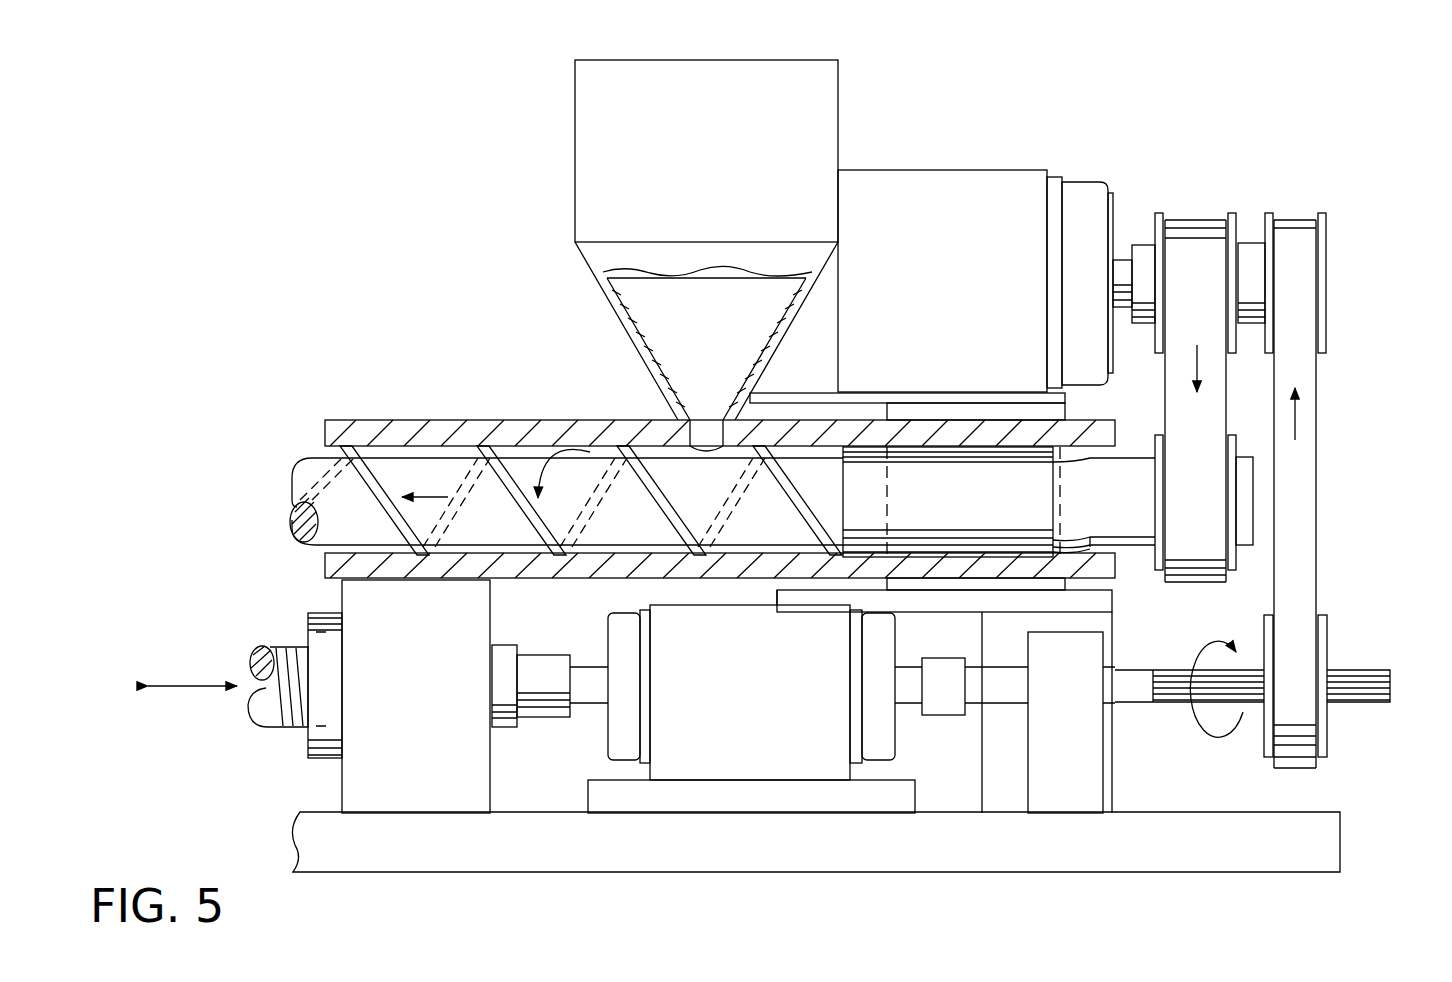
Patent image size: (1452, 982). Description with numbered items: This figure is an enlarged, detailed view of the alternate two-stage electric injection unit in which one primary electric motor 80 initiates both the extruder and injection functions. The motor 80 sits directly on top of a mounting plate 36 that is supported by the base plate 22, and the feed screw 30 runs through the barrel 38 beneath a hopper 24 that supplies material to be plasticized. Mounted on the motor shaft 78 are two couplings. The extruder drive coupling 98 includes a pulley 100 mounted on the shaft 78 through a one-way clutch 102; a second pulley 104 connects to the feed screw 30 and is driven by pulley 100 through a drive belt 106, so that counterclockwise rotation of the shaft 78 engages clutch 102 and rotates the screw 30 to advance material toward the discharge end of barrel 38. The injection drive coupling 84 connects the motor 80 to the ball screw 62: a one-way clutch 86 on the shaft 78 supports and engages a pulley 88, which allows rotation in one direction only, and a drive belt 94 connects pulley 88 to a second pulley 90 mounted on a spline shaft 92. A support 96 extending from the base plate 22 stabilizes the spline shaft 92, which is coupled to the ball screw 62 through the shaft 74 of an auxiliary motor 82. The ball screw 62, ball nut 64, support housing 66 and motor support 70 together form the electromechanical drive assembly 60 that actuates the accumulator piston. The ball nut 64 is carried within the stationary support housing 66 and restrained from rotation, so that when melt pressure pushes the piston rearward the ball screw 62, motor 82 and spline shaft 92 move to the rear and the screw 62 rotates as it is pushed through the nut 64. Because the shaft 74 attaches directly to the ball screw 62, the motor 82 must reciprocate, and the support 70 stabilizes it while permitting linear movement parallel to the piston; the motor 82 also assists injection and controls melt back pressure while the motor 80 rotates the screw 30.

The base plate 22 is at (1205, 856).
The hopper 24 is at (731, 166).
The feed screw 30 is at (395, 470).
The mounting plate 36 is at (972, 405).
The barrel 38 is at (455, 432).
The electromechanical drive assembly 60 is at (528, 830).
The ball screw 62 is at (290, 648).
The ball nut 64 is at (330, 663).
The support housing 66 is at (433, 722).
The motor support 70 is at (712, 795).
The shaft 74 is at (590, 690).
The motor shaft 78 is at (1115, 268).
The electric motor 80 is at (933, 314).
The auxiliary motor 82 is at (761, 684).
The injection drive coupling 84 is at (1358, 355).
The one-way clutch 86 is at (1253, 258).
The pulley 88 is at (1328, 225).
The second pulley 90 is at (1332, 627).
The spline shaft 92 is at (1362, 692).
The drive belt 94 is at (1305, 505).
The support 96 is at (1083, 744).
The extruder drive coupling 98 is at (1205, 165).
The pulley 100 is at (1232, 213).
The one-way clutch 102 is at (1143, 255).
The second pulley 104 is at (1150, 565).
The drive belt 106 is at (1225, 471).